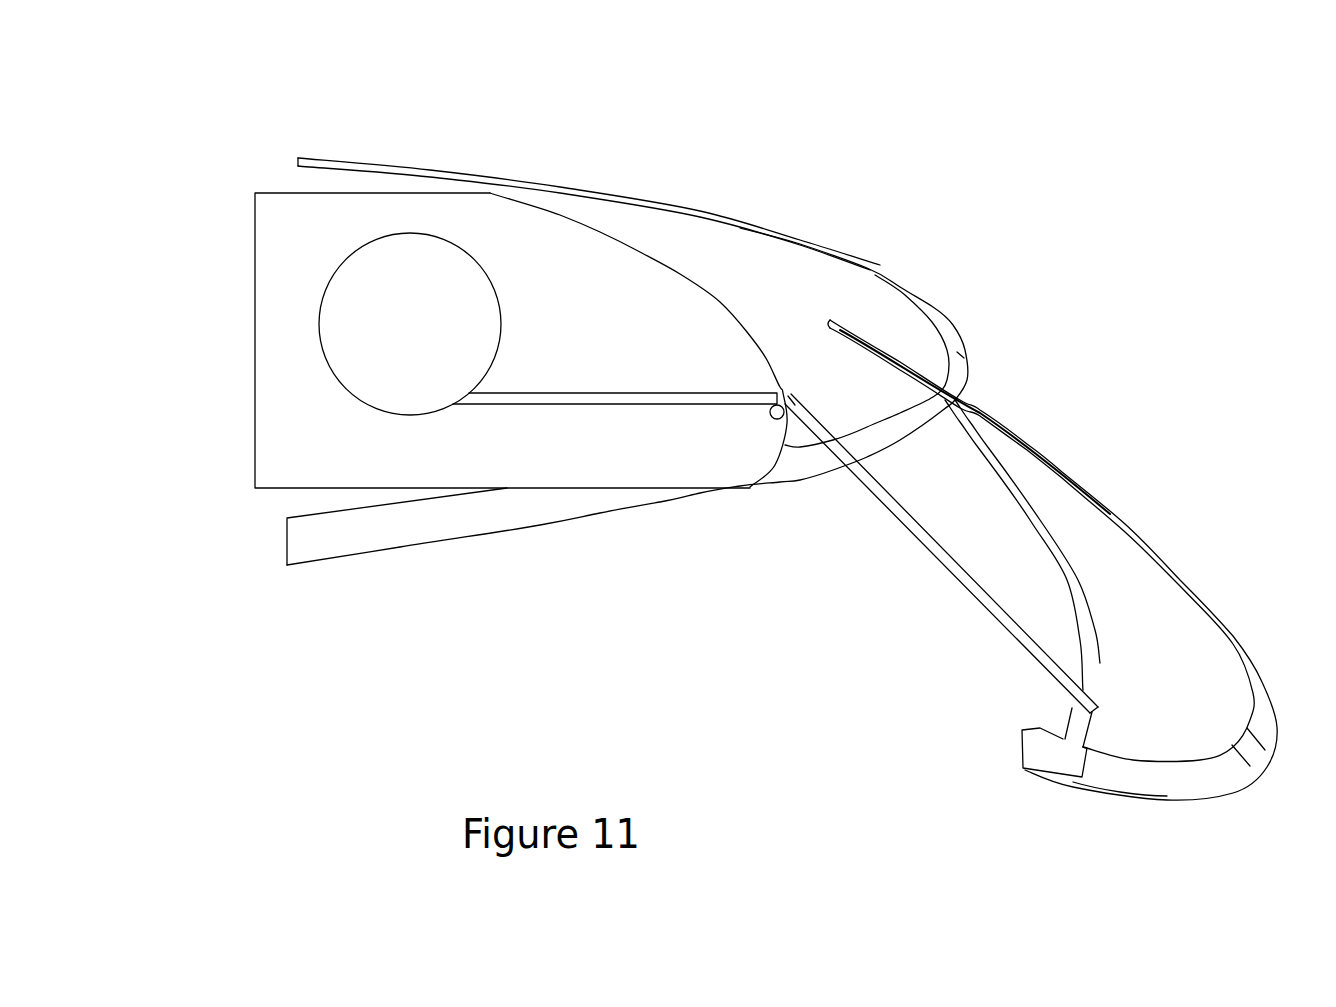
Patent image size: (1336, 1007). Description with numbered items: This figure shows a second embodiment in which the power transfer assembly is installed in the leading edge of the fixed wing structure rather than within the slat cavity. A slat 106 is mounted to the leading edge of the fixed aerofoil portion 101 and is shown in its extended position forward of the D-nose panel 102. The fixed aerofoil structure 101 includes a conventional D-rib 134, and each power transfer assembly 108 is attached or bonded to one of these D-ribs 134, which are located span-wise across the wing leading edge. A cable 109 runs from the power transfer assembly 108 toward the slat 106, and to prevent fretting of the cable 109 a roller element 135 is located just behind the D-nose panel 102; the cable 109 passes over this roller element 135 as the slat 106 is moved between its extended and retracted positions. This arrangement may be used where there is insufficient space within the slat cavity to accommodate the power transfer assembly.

The fixed aerofoil portion 101 is at (543, 148).
The D-nose panel 102 is at (880, 265).
The slat 106 is at (1166, 522).
The power transfer assembly 108 is at (406, 400).
The cable 109 is at (924, 566).
The D-rib 134 is at (261, 209).
The roller element 135 is at (774, 439).